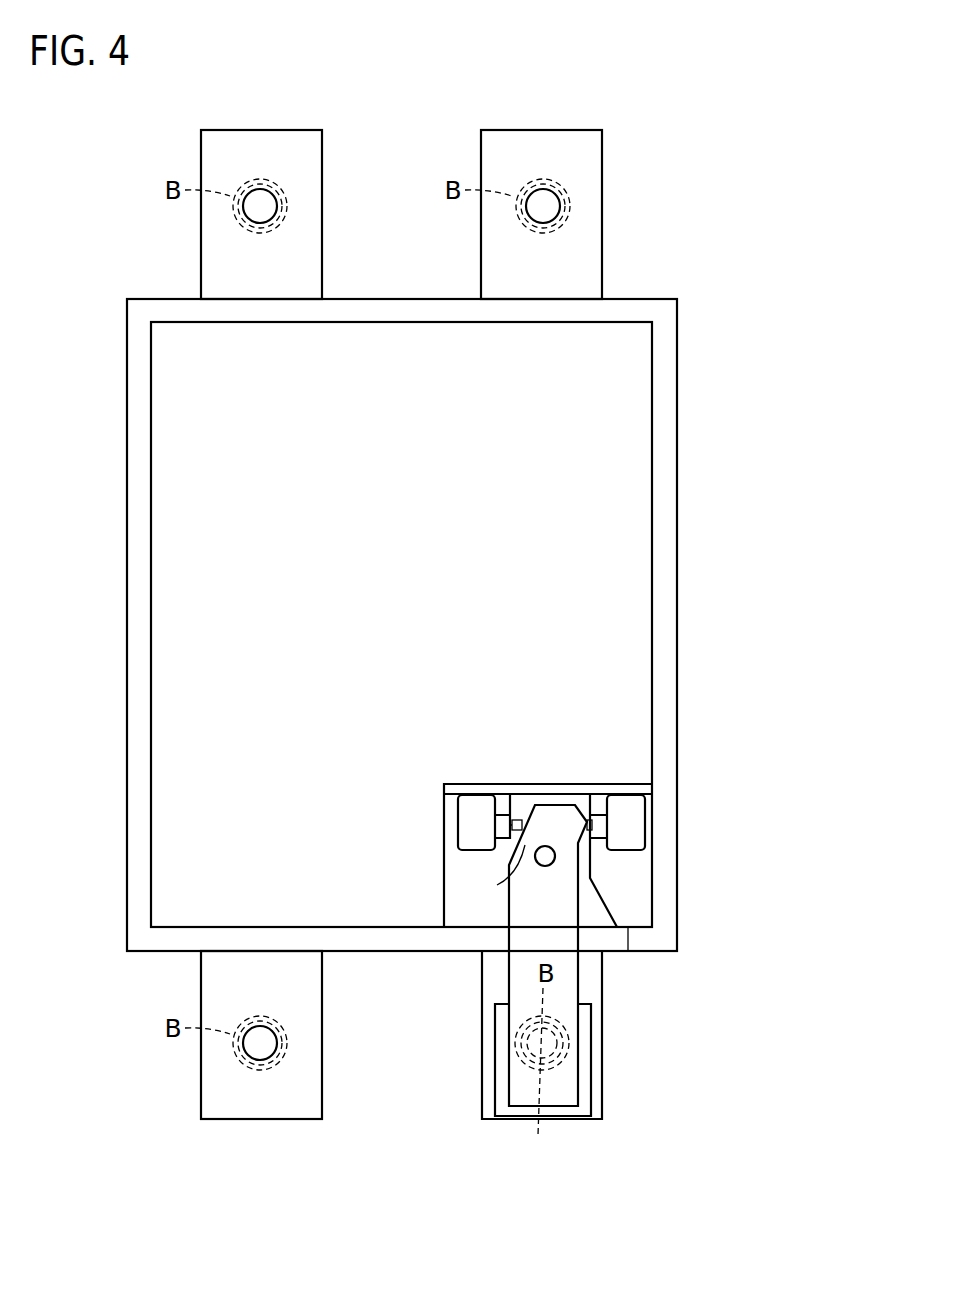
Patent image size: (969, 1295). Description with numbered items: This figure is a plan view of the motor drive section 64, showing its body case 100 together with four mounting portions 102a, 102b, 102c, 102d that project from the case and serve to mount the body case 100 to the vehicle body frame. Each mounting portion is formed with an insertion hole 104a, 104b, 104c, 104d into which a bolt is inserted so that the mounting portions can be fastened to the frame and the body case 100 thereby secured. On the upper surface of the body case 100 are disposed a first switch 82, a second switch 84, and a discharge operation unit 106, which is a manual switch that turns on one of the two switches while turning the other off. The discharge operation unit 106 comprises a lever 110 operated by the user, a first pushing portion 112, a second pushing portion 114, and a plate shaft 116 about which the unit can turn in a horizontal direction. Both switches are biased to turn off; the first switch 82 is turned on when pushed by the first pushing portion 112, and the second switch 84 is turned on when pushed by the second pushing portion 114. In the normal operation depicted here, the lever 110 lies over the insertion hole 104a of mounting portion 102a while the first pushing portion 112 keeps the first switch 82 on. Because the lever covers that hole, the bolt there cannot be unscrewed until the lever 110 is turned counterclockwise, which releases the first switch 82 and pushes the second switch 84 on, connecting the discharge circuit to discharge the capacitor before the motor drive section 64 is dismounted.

The motor drive section 64 is at (681, 270).
The body case 100 is at (677, 495).
The mounting portion 102a is at (482, 990).
The mounting portion 102b is at (322, 1025).
The mounting portion 102c is at (602, 190).
The mounting portion 102d is at (322, 190).
The insertion hole 104a is at (542, 1091).
The insertion hole 104b is at (258, 1037).
The insertion hole 104c is at (540, 200).
The insertion hole 104d is at (258, 200).
The first switch 82 is at (622, 802).
The second switch 84 is at (476, 802).
The discharge operation unit 106 is at (592, 984).
The lever 110 is at (591, 1092).
The first pushing portion 112 is at (585, 822).
The second pushing portion 114 is at (492, 880).
The plate shaft 116 is at (545, 866).